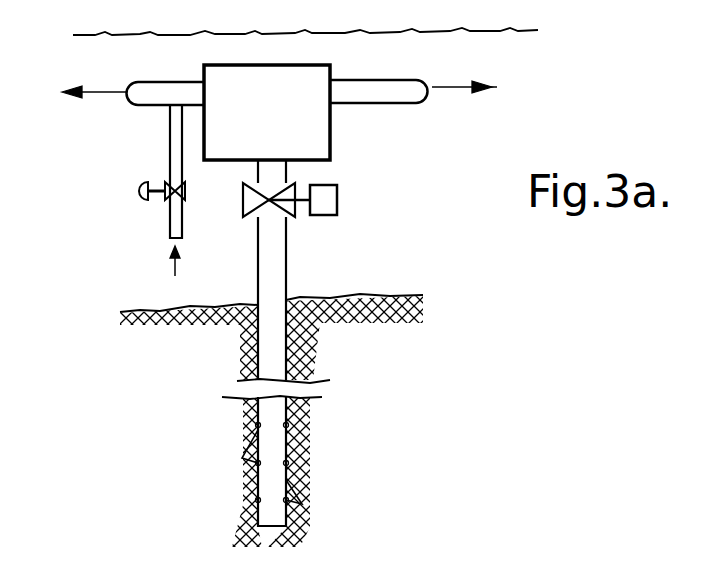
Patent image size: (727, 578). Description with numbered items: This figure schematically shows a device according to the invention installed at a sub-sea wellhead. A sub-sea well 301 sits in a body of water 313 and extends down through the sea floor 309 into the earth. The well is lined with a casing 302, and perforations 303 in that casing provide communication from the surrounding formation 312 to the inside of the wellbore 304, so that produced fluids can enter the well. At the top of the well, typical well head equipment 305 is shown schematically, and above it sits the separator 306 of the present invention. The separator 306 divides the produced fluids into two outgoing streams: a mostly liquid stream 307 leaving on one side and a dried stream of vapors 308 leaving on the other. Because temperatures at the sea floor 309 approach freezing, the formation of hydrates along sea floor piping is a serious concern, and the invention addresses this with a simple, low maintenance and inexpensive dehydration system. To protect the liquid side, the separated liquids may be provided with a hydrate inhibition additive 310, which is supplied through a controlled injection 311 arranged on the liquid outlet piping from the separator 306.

The sub-sea well 301 is at (287, 240).
The casing 302 is at (275, 300).
The perforations 303 is at (258, 462).
The wellbore 304 is at (290, 448).
The well head equipment 305 is at (290, 183).
The separator 306 is at (225, 65).
The mostly liquid stream 307 is at (97, 94).
The dried stream of vapors 308 is at (458, 88).
The sea floor 309 is at (163, 310).
The hydrate inhibition additive 310 is at (172, 270).
The controlled injection 311 is at (130, 191).
The formation 312 is at (243, 430).
The body of water 313 is at (470, 60).